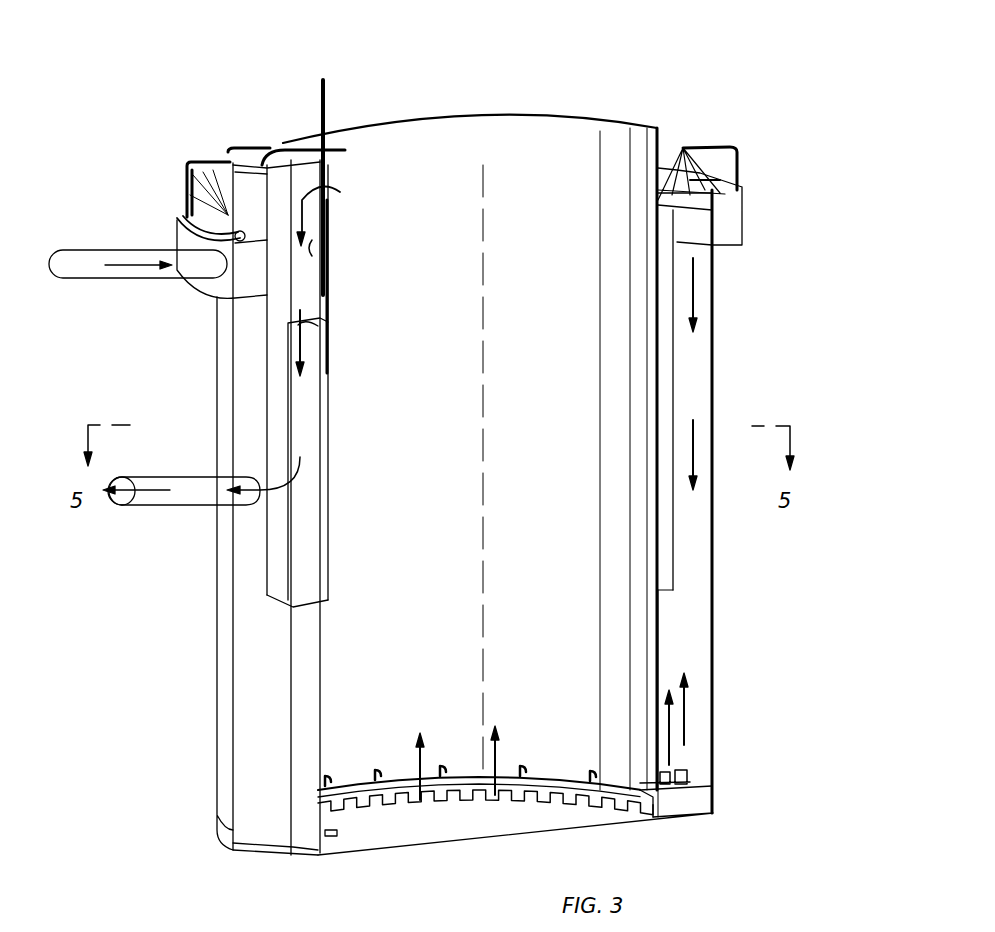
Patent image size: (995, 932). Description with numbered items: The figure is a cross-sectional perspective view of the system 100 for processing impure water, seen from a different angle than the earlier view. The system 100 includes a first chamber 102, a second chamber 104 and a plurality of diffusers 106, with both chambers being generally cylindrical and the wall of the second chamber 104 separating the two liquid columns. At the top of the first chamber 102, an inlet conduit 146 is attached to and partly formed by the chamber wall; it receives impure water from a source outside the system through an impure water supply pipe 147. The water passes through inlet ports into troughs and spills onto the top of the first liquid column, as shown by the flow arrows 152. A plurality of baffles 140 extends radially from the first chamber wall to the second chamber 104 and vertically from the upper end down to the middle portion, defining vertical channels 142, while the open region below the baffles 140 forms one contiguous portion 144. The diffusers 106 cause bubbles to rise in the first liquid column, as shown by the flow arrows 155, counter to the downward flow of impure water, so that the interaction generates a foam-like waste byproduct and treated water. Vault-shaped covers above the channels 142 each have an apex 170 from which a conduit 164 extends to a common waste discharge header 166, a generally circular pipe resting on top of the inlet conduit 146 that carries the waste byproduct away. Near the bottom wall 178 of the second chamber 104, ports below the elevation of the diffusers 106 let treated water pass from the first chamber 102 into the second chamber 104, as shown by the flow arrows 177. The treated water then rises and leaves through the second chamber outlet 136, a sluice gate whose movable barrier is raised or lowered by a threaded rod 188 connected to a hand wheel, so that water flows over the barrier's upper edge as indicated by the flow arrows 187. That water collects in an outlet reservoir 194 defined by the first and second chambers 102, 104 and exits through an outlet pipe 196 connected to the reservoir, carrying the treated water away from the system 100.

The system 100 is at (757, 98).
The first chamber 102 is at (712, 555).
The second chamber 104 is at (573, 134).
The diffusers 106 is at (688, 778).
The second chamber outlet 136 is at (300, 282).
The baffles 140 is at (663, 415).
The vertical channels 142 is at (695, 357).
The contiguous portion 144 is at (665, 660).
The inlet conduit 146 is at (735, 218).
The impure water supply pipe 147 is at (97, 250).
The flow arrows 152 is at (695, 300).
The flow arrows 155 is at (686, 708).
The conduits 164 is at (740, 150).
The waste discharge header 166 is at (718, 181).
The apex 170 is at (683, 148).
The flow arrows 177 is at (427, 752).
The bottom wall 178 is at (412, 833).
The flow arrows 187 is at (335, 190).
The threaded rod 188 is at (327, 100).
The outlet reservoir 194 is at (300, 422).
The outlet pipe 196 is at (148, 505).